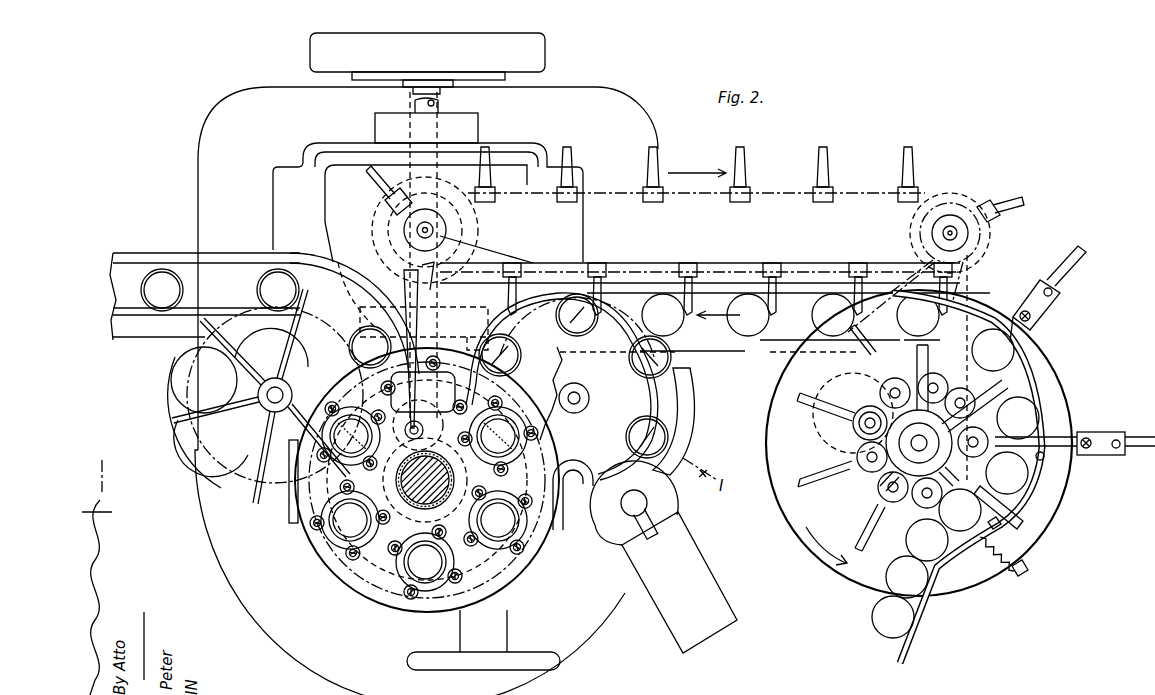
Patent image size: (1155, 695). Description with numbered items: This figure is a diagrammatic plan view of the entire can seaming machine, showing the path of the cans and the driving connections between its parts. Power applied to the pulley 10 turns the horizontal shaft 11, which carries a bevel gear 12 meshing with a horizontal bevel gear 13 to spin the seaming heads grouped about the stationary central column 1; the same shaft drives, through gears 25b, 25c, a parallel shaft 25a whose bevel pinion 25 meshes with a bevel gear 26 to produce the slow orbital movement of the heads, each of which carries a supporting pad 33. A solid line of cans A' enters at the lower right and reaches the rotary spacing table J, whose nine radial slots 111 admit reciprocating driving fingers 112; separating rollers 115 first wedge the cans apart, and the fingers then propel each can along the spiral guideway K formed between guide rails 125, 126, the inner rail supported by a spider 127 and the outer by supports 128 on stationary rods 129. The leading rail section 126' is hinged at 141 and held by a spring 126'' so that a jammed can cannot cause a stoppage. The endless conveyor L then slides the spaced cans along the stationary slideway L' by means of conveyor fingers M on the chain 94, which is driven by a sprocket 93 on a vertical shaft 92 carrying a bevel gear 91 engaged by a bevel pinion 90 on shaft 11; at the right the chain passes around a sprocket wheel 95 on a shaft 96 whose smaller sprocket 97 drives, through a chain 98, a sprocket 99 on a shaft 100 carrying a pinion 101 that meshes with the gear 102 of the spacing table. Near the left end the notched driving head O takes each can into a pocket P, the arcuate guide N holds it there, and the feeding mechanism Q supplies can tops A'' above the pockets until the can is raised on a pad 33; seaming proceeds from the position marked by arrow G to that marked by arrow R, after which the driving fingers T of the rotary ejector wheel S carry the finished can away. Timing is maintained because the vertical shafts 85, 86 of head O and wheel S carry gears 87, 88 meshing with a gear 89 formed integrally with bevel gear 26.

The pulley 10 is at (310, 56).
The horizontal shaft 11 is at (413, 102).
The shaft 25a is at (410, 128).
The gear 25b is at (448, 358).
The gear 25c is at (386, 341).
The bevel pinion 25 is at (420, 339).
The bevel pinion 90 is at (432, 185).
The bevel gear 91 is at (466, 232).
The vertical shaft 92 is at (416, 232).
The sprocket 93 is at (445, 233).
The chain 94 is at (601, 193).
The sprocket wheel 95 is at (920, 233).
The vertical shaft 96 is at (955, 230).
The sprocket 97 is at (952, 214).
The endless conveyor L is at (715, 296).
The stationary slideway L' is at (790, 315).
The conveyor fingers M is at (756, 262).
The driving fingers T is at (264, 313).
The guide bar T' is at (253, 481).
The rotary ejector wheel S is at (259, 396).
The vertical driving shaft 86 is at (275, 395).
The gear 88 is at (122, 479).
The bevel gear 26 is at (502, 557).
The central column 1 is at (418, 492).
The horizontal bevel gear 13 is at (497, 519).
The supporting pad 33 is at (527, 528).
The gear 89 is at (503, 560).
The cans A' is at (398, 573).
The holder H' is at (341, 525).
The arrow R is at (348, 435).
The arrow G is at (497, 435).
The bevel gear 12 is at (424, 411).
The arcuate guide N is at (424, 320).
The driving head O is at (565, 365).
The can tops A'' is at (575, 376).
The vertical driving shaft 85 is at (578, 392).
The notch or pocket P is at (566, 438).
The gear 87 is at (693, 425).
The feeding mechanism Q is at (663, 557).
The spiral guideway K is at (1034, 391).
The spider 127 is at (944, 418).
The guide rail 126 is at (994, 478).
The leading section of guide rail 126' is at (922, 483).
The spring 126'' is at (1023, 559).
The gear 102 is at (896, 386).
The guide rail 125 is at (942, 383).
The pinion 101 is at (852, 398).
The vertical shaft 100 is at (835, 450).
The sprocket 99 is at (822, 434).
The separating rollers 115 is at (878, 487).
The radial slots 111 is at (822, 491).
The chain 98 is at (848, 366).
The supports 128 is at (1032, 327).
The stationary rods 129 is at (1023, 311).
The hinge 141 is at (1043, 460).
The rotary spacing table J is at (1029, 495).
The driving fingers 112 is at (1022, 532).